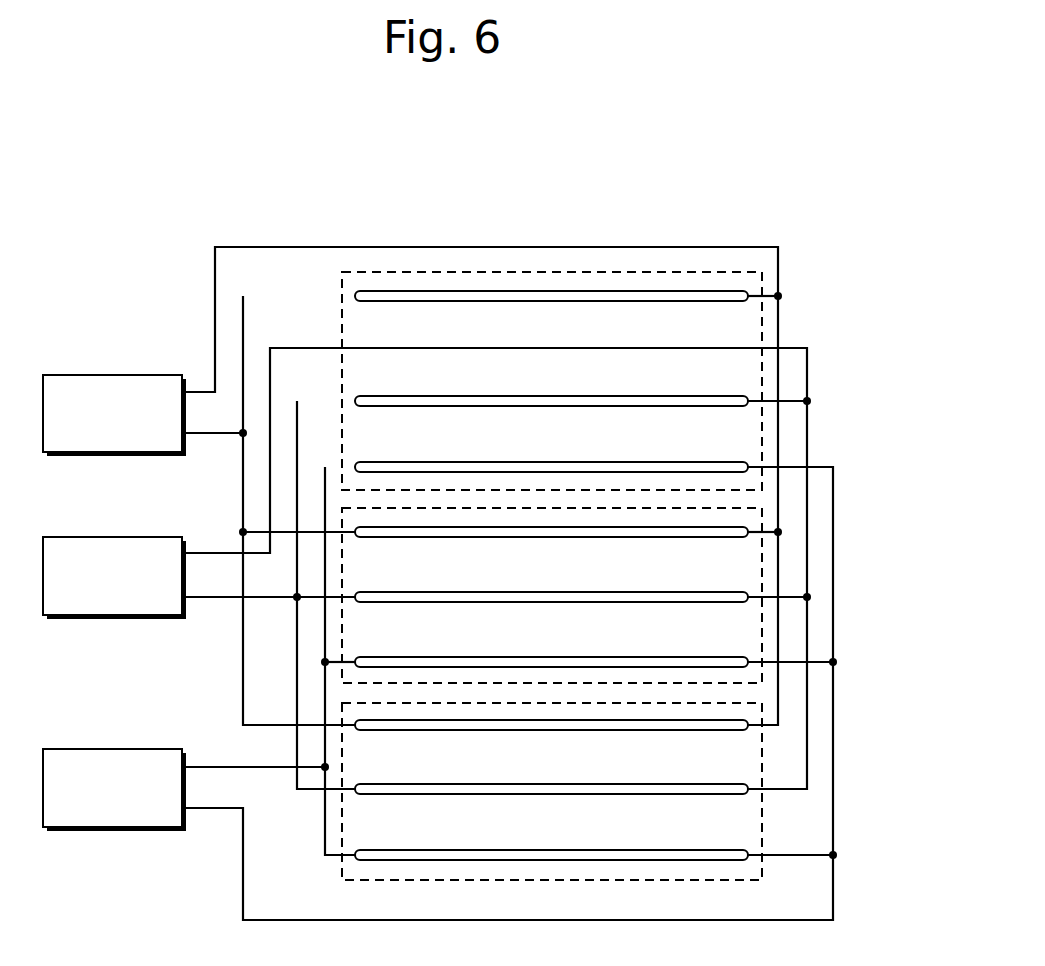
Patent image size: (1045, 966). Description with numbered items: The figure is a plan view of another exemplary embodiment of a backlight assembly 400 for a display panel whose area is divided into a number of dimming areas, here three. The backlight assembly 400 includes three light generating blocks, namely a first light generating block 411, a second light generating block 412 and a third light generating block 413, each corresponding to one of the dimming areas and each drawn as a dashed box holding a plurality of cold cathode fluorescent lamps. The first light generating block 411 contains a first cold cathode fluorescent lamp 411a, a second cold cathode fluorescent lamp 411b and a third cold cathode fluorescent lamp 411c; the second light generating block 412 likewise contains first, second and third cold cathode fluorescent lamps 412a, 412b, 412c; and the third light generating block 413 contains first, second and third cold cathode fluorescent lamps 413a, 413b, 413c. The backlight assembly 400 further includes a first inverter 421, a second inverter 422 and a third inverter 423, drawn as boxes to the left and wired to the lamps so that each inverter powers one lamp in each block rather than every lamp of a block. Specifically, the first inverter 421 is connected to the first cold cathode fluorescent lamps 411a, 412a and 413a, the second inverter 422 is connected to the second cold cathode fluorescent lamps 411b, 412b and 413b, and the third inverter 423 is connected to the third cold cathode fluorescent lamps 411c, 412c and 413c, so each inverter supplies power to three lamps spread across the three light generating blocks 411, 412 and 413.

The backlight assembly 400 is at (778, 190).
The first light generating block 411 is at (762, 380).
The first cold cathode fluorescent lamp 411a is at (552, 301).
The second cold cathode fluorescent lamp 411b is at (547, 408).
The third cold cathode fluorescent lamp 411c is at (587, 460).
The second light generating block 412 is at (762, 618).
The first cold cathode fluorescent lamp 412a is at (552, 537).
The second cold cathode fluorescent lamp 412b is at (547, 604).
The third cold cathode fluorescent lamp 412c is at (587, 655).
The third light generating block 413 is at (762, 811).
The first cold cathode fluorescent lamp 413a is at (552, 730).
The second cold cathode fluorescent lamp 413b is at (547, 796).
The third cold cathode fluorescent lamp 413c is at (587, 848).
The first inverter 421 is at (120, 375).
The second inverter 422 is at (120, 537).
The third inverter 423 is at (120, 749).